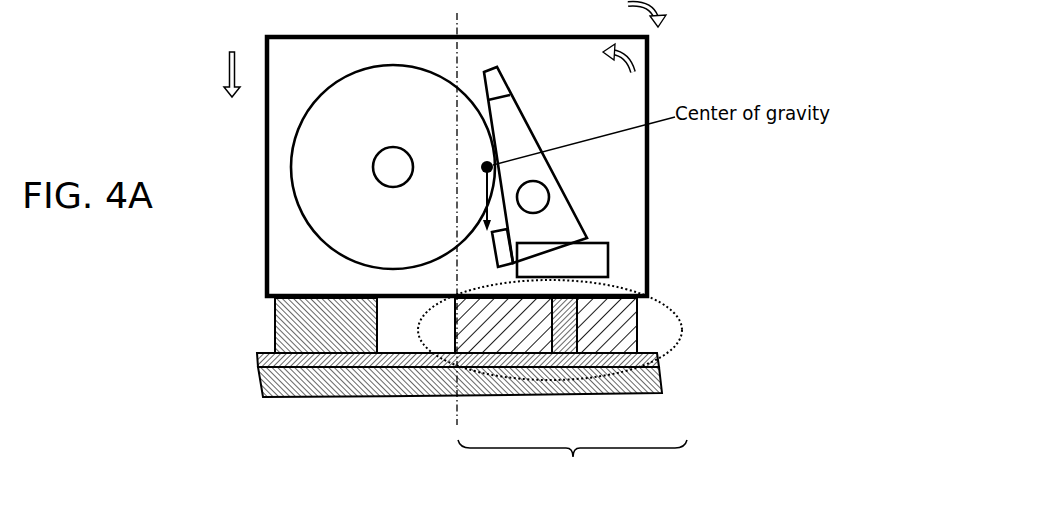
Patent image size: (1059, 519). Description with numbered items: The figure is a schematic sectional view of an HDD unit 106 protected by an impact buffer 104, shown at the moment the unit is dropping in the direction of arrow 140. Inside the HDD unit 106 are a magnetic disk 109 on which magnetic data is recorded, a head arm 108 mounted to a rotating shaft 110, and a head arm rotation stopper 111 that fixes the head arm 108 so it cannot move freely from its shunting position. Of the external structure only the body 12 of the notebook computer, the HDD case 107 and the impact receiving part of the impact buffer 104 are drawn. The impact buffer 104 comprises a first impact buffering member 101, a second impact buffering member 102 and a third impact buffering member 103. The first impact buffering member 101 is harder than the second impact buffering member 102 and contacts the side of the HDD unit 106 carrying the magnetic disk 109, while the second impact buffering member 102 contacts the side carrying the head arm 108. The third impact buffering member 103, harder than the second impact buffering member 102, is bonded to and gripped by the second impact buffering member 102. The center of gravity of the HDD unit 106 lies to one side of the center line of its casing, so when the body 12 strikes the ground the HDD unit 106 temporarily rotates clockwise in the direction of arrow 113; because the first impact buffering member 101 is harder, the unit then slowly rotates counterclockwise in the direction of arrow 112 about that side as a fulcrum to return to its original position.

The body 12 is at (640, 380).
The first impact buffering member 101 is at (338, 332).
The second impact buffering member 102 is at (503, 332).
The third impact buffering member 103 is at (568, 332).
The impact buffer 104 is at (572, 466).
The HDD unit 106 is at (265, 267).
The HDD case 107 is at (653, 360).
The head arm 108 is at (534, 135).
The magnetic disk 109 is at (313, 155).
The rotating shaft 110 is at (533, 197).
The head arm rotation stopper 111 is at (502, 249).
The arrow 112 is at (638, 63).
The arrow 113 is at (663, 10).
The arrow 140 is at (225, 90).